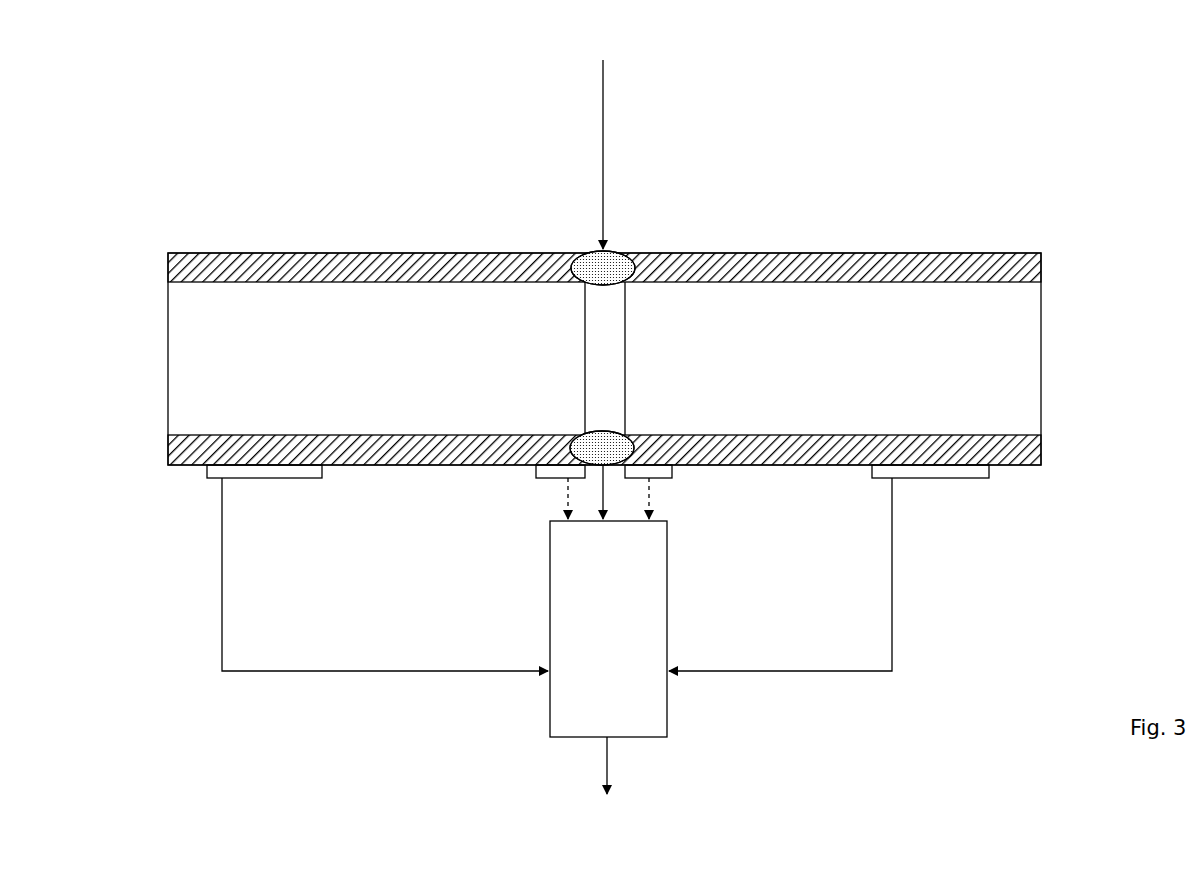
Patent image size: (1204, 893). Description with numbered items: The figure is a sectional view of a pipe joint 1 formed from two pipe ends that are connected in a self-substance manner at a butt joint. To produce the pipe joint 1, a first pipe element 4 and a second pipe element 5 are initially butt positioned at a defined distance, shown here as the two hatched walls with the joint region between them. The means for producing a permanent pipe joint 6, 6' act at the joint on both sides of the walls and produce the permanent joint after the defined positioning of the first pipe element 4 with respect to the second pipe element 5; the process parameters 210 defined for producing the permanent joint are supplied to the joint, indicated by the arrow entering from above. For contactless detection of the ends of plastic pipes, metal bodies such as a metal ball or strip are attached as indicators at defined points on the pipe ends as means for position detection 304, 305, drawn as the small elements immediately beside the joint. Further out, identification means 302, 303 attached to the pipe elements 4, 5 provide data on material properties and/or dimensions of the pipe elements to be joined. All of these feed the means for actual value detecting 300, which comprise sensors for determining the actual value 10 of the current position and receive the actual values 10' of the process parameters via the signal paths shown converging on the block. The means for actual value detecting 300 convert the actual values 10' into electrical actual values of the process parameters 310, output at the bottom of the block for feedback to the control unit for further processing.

The pipe joint 1 is at (368, 125).
The first pipe element 4 is at (267, 262).
The second pipe element 5 is at (927, 262).
The means for producing a permanent pipe joint 6 is at (625, 210).
The means for producing a permanent pipe joint 6' is at (624, 408).
The process parameters 210 is at (603, 136).
The identification means 302 is at (265, 480).
The identification means 303 is at (933, 470).
The means for position detection 304 is at (558, 470).
The means for position detection 305 is at (660, 470).
The actual values of the process parameters 10' is at (423, 568).
The actual value 10 is at (839, 574).
The means for actual value detecting 300 is at (650, 697).
The electrical actual values of the process parameters 310 is at (608, 758).